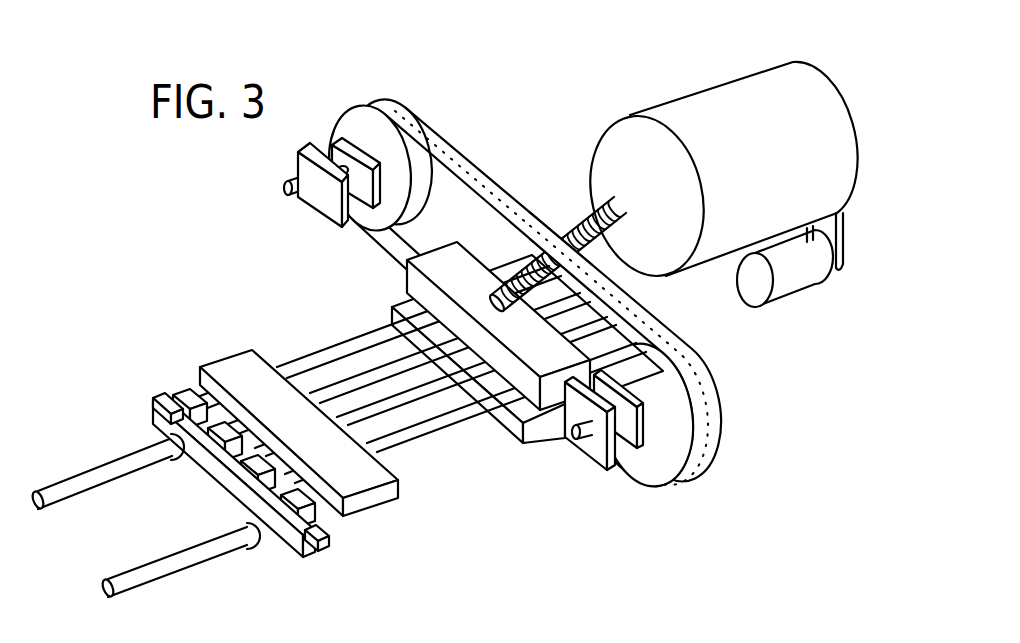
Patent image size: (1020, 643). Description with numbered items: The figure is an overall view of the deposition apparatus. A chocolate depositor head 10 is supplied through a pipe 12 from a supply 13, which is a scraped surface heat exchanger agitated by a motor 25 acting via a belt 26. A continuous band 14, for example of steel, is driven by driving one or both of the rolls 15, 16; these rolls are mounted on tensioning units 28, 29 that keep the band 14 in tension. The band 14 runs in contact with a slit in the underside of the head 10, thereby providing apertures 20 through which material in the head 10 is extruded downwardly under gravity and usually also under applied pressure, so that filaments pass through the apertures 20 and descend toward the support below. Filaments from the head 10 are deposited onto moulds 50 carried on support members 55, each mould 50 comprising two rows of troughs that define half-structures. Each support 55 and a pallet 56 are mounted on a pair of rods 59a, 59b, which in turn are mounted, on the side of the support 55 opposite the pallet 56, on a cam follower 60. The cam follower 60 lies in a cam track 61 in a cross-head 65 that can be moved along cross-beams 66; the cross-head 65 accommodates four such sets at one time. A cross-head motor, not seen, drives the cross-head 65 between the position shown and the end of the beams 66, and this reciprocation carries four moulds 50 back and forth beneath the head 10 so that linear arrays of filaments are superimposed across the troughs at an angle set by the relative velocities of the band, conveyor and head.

The chocolate depositor head 10 is at (406, 283).
The pipe 12 is at (578, 214).
The supply 13 is at (780, 84).
The continuous band 14 is at (461, 150).
The roll 15 is at (358, 118).
The roll 16 is at (667, 462).
The apertures 20 is at (484, 180).
The motor 25 is at (798, 287).
The belt 26 is at (843, 237).
The tensioning unit 28 is at (298, 168).
The tensioning unit 29 is at (603, 462).
The mould 50 is at (392, 310).
The support member 55 is at (530, 447).
The pallet 56 is at (370, 484).
The rod 59a is at (451, 432).
The rod 59b is at (427, 457).
The cam follower 60 is at (322, 549).
The cam track 61 is at (153, 412).
The cross-head 65 is at (285, 546).
The cross-beams 66 is at (137, 572).